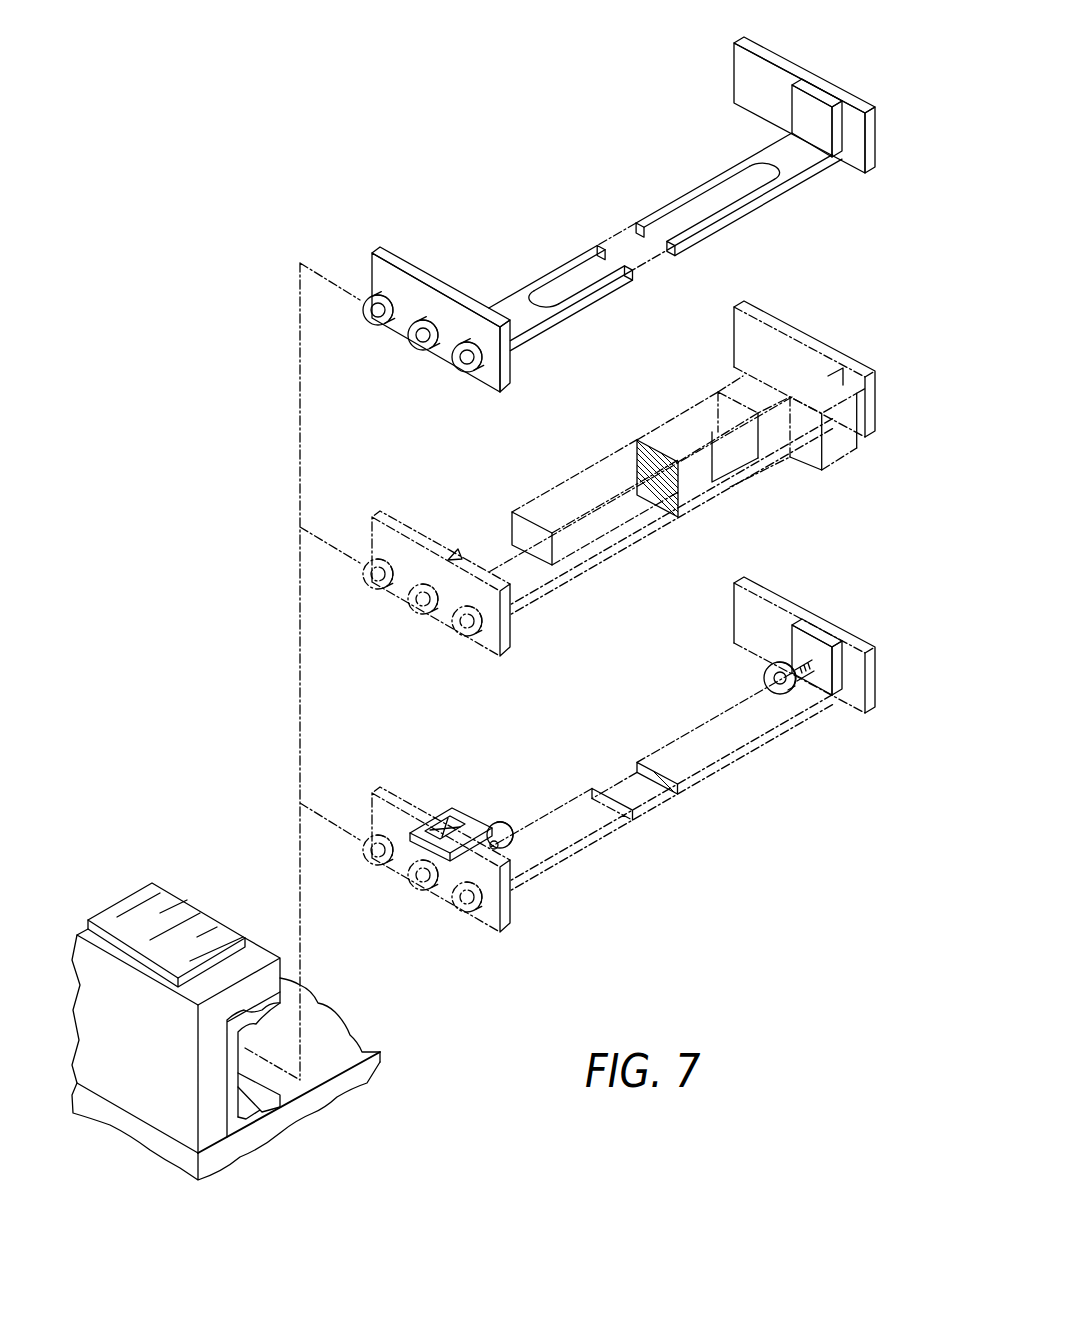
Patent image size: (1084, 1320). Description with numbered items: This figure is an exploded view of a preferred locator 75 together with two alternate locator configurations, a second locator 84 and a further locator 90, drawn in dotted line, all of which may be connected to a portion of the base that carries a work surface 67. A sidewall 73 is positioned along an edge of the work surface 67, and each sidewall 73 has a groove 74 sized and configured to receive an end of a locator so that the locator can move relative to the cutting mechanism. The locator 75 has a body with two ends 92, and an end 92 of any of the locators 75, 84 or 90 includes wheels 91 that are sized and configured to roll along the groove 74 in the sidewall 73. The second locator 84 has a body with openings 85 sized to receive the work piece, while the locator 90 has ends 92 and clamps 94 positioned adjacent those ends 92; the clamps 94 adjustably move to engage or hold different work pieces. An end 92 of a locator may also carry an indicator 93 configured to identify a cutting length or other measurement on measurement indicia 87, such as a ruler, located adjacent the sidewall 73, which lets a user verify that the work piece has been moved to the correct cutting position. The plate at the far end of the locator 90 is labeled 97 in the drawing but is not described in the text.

The locator 75 is at (686, 191).
The second locator 84 is at (689, 441).
The locator 90 is at (688, 717).
The ends 92 is at (651, 484).
The plate 97 is at (828, 645).
The wheels 91 is at (423, 618).
The openings 85 is at (689, 489).
The indicator 93 is at (461, 673).
The clamps 94 is at (755, 673).
The measurement indicia 87 is at (166, 923).
The work surface 67 is at (256, 1079).
The sidewalls 73 is at (176, 1059).
The groove 74 is at (282, 1125).